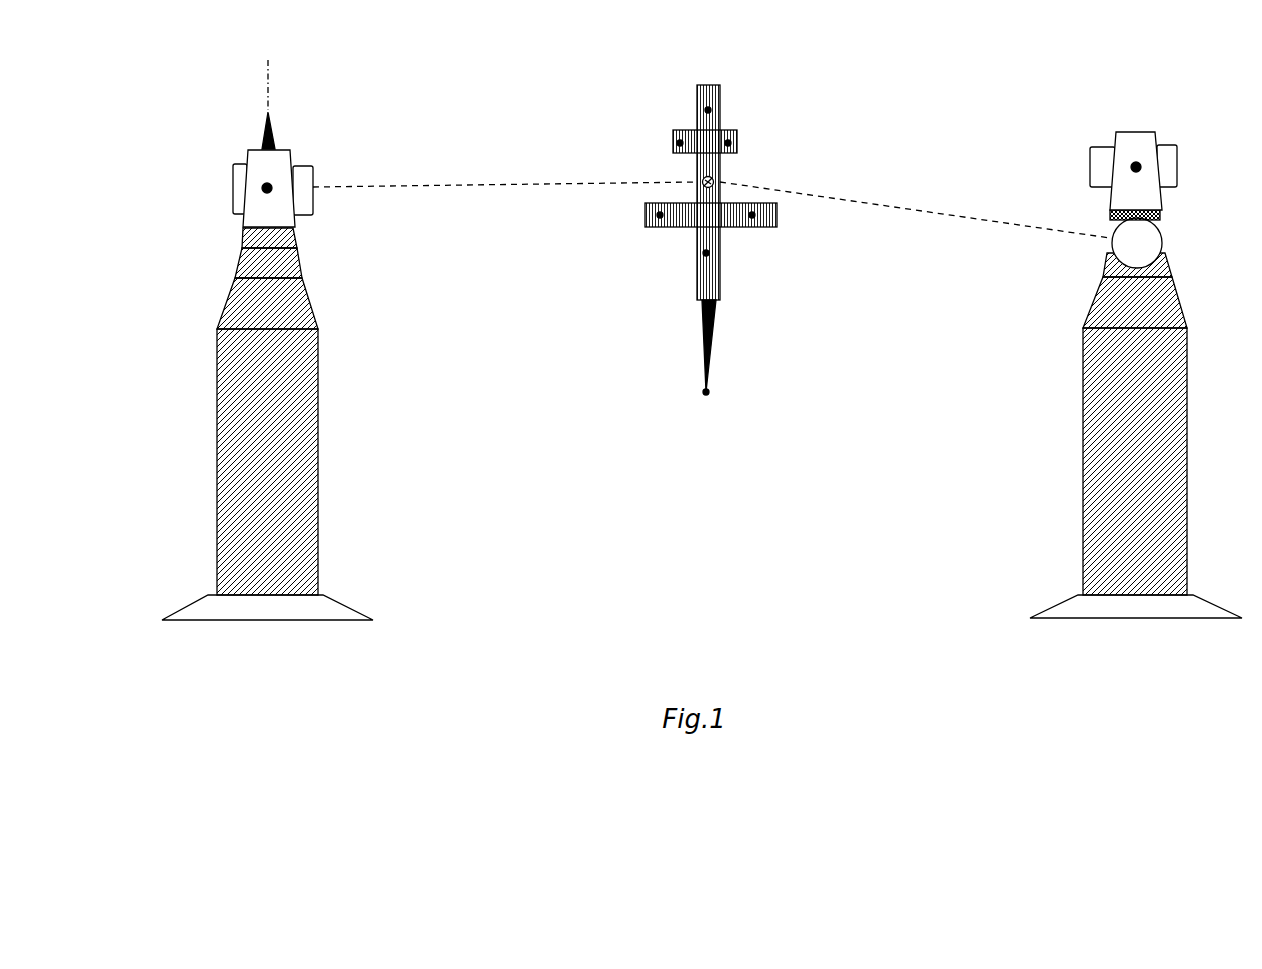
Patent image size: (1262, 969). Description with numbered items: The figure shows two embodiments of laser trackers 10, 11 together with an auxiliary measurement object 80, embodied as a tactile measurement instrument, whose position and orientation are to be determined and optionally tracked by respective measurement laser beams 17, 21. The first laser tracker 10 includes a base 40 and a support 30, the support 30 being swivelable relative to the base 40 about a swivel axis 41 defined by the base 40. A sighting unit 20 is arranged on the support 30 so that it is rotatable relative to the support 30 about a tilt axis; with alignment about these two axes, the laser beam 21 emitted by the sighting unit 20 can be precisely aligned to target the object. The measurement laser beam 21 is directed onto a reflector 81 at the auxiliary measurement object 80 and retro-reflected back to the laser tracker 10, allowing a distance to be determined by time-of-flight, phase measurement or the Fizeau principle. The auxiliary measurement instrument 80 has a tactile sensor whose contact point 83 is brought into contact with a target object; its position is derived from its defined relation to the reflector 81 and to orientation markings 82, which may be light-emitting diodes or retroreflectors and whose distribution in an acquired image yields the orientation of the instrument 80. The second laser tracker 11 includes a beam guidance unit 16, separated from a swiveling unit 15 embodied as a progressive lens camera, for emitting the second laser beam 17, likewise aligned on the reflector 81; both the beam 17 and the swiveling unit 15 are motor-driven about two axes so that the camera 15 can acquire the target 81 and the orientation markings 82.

The first laser tracker 10 is at (235, 72).
The second laser tracker 11 is at (1114, 94).
The swiveling unit 15 is at (1168, 153).
The beam guidance unit 16 is at (1152, 240).
The second laser beam 17 is at (970, 218).
The sighting unit 20 is at (240, 172).
The measurement laser beam 21 is at (568, 183).
The support 30 is at (274, 170).
The base 40 is at (257, 240).
The swivel axis 41 is at (268, 90).
The auxiliary measurement object 80 is at (692, 58).
The reflector 81 is at (720, 178).
The orientation markings 82 is at (712, 97).
The contact point 83 is at (709, 389).